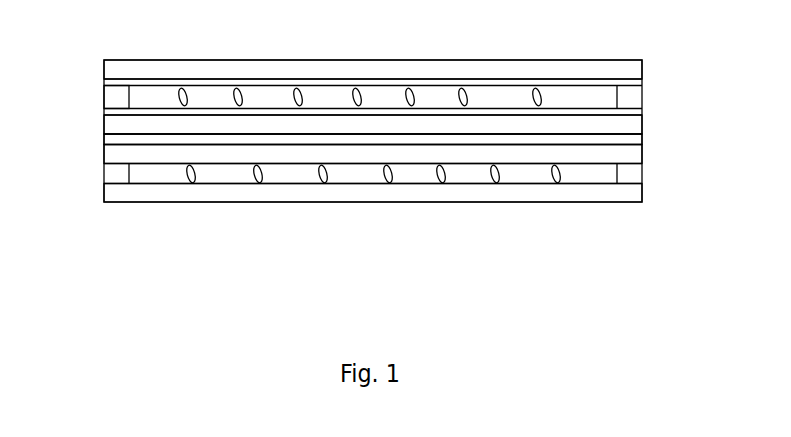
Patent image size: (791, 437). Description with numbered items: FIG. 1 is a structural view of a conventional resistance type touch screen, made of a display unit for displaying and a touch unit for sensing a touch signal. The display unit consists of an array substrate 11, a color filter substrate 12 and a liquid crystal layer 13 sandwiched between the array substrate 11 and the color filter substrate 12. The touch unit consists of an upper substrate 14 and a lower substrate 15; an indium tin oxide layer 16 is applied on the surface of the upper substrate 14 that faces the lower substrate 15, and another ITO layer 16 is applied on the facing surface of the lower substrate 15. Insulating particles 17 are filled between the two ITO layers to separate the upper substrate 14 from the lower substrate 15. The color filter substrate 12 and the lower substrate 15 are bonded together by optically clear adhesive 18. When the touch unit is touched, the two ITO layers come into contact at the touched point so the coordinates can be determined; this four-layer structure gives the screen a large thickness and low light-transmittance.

The array substrate 11 is at (617, 195).
The color filter substrate 12 is at (628, 155).
The liquid crystal layer 13 is at (388, 183).
The upper substrate 14 is at (398, 67).
The lower substrate 15 is at (292, 123).
The indium tin oxide (ITO) layer 16 is at (104, 81).
The insulating particles 17 is at (538, 92).
The optically clear adhesive (OCA) 18 is at (240, 140).